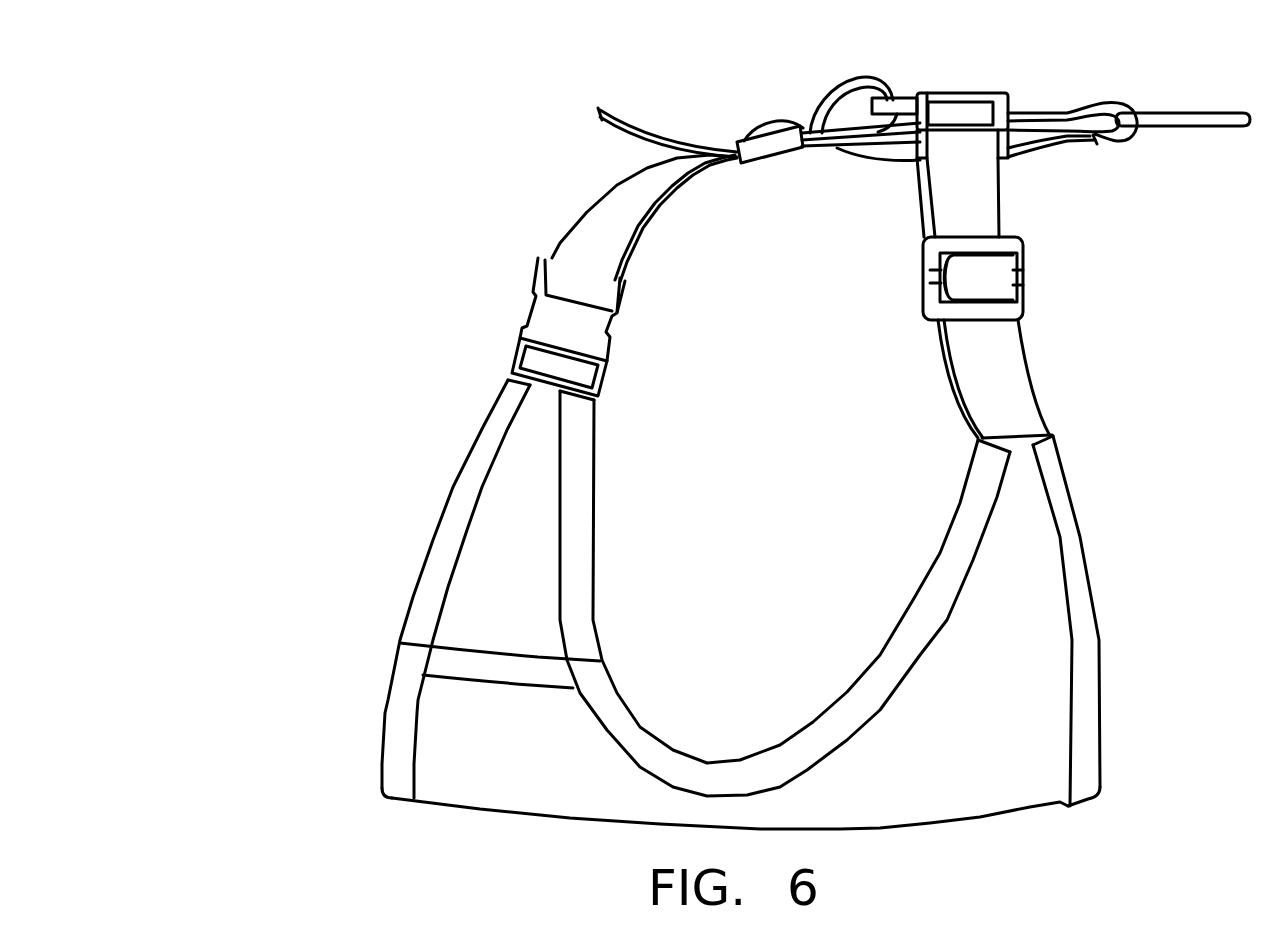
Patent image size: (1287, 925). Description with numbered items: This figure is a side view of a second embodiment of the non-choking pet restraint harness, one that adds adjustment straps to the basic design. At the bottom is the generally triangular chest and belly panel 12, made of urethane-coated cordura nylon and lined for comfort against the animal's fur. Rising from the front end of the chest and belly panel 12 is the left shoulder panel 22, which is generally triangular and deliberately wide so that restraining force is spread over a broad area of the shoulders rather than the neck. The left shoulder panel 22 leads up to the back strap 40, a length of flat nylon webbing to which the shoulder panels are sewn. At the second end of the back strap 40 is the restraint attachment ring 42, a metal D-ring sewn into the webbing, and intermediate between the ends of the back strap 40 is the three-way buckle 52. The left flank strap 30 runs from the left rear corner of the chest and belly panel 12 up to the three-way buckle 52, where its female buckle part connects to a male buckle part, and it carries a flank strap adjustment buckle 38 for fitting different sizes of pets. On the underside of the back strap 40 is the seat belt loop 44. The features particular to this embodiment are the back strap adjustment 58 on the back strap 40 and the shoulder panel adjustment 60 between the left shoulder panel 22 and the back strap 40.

The chest and belly panel 12 is at (562, 802).
The left shoulder panel 22 is at (462, 567).
The left flank strap 30 is at (1015, 372).
The flank strap adjustment buckle 38 is at (1020, 247).
The back strap 40 is at (730, 158).
The restraint attachment ring 42 is at (1196, 127).
The seat belt loop 44 is at (866, 140).
The 3-way buckle 52 is at (923, 98).
The back strap adjustment 58 is at (741, 142).
The shoulder panel adjustment 60 is at (595, 338).